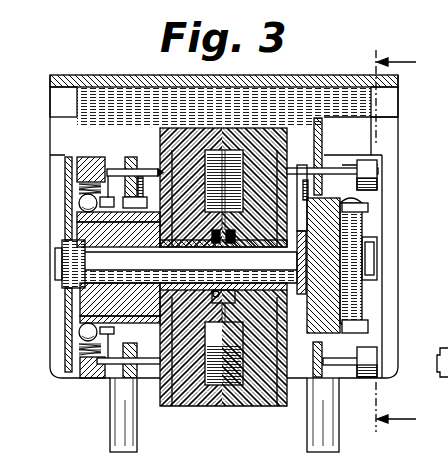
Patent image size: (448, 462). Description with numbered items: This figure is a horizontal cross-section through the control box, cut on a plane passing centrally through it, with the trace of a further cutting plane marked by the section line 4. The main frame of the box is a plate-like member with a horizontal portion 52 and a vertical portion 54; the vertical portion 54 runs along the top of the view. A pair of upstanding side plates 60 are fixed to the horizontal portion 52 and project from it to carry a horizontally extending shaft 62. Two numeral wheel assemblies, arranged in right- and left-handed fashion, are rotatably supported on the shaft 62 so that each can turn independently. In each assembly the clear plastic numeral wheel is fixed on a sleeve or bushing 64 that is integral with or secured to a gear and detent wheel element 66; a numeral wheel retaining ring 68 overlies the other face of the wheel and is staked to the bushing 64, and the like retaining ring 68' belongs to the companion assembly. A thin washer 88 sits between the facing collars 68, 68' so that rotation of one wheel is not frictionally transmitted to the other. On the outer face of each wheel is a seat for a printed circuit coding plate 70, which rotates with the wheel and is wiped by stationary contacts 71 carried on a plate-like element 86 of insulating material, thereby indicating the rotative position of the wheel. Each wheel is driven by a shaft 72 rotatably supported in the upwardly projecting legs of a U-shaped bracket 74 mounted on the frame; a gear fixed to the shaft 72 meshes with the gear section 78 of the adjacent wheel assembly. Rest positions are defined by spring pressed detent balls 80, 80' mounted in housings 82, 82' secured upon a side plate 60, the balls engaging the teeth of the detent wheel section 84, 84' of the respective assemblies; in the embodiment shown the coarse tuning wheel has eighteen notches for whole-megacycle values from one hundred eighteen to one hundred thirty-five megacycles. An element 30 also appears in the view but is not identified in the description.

The motor 30 is at (244, 407).
The horizontal portion 52 is at (396, 212).
The vertical portion 54 is at (198, 89).
The side plates 60 is at (67, 308).
The shaft 62 is at (92, 261).
The sleeve or bushing 64 is at (169, 244).
The gear and detent wheel element 66 is at (114, 244).
The numeral wheel retaining ring 68 is at (201, 348).
The numeral wheel retaining ring 68' is at (254, 348).
The printed circuit coding plate 70 is at (158, 200).
The stationary contacts 71 is at (164, 172).
The shaft 72 is at (115, 421).
The U-shaped bracket 74 is at (157, 360).
The gear section 78 is at (115, 182).
The spring pressed detent balls 80 is at (57, 269).
The spring pressed detent ball 80' is at (386, 257).
The housings 82 is at (59, 267).
The housing 82' is at (400, 267).
The detent wheel section 84 is at (91, 267).
The detent wheel section 84' is at (371, 265).
The plate-like element 86 is at (133, 157).
The thin washer 88 is at (219, 242).
The section line 4- 4 is at (396, 245).